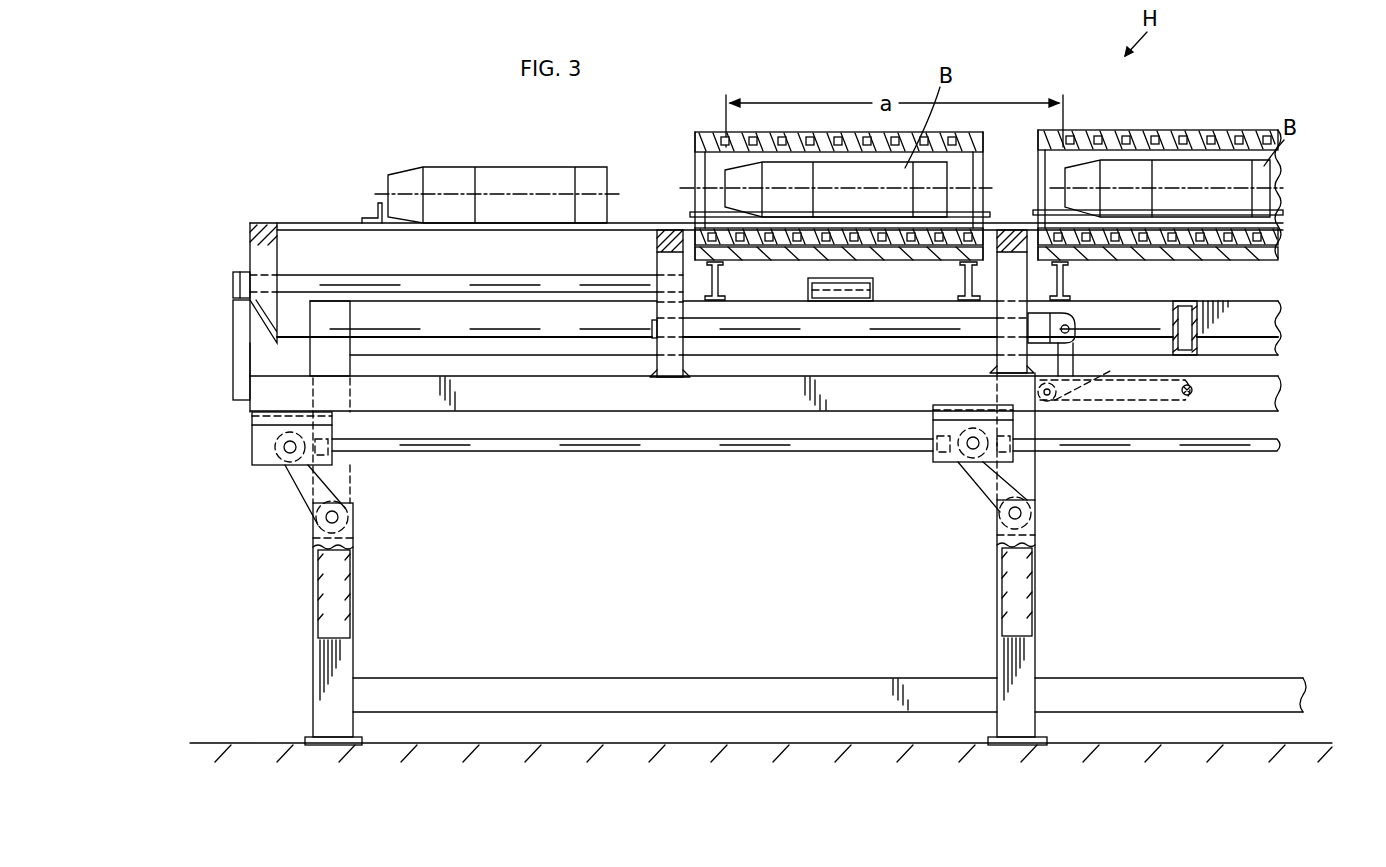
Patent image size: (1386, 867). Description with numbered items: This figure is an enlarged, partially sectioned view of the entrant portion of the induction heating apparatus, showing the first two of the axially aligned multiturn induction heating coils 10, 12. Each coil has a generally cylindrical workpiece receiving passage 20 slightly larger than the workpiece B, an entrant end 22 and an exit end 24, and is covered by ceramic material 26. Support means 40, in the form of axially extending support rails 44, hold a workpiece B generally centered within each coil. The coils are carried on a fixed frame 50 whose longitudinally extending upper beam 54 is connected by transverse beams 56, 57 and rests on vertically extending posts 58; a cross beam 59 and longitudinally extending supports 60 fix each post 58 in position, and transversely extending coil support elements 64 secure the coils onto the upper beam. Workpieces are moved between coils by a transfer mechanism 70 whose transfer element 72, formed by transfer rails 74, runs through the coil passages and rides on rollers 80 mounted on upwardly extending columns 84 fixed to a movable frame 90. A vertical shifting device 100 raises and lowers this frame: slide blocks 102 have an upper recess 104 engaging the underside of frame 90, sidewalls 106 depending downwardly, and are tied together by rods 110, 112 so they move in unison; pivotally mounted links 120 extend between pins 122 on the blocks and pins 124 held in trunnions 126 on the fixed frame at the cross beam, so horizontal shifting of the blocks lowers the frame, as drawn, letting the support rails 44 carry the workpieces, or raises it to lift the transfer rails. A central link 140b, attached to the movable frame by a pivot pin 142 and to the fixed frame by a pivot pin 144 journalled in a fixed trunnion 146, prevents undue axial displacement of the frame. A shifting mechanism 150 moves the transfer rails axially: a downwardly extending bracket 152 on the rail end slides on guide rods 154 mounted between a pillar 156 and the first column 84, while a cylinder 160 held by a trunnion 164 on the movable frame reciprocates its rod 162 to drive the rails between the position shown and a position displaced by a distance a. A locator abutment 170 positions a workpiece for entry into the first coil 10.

The induction heating coil 10 is at (756, 130).
The induction heating coil 12 is at (1166, 130).
The workpiece receiving passage 20 is at (960, 160).
The entrant end 22 is at (700, 165).
The exit end 24 is at (986, 165).
The roller chain track 26 is at (795, 134).
The support means 40 is at (957, 251).
The support rail 44 is at (707, 207).
The fixed frame 50 is at (1050, 636).
The upper beam 54 is at (1100, 301).
The transverse beam 56 is at (1210, 322).
The transverse beam 57 is at (871, 291).
The post 58 is at (350, 656).
The cross beam 59 is at (352, 592).
The longitudinally extending support 60 is at (790, 678).
The coil support element 64 is at (719, 285).
The transfer mechanism 70 is at (272, 487).
The transfer element 72 is at (647, 221).
The transfer rail 74 is at (312, 222).
The roller 80 is at (691, 222).
The column 84 is at (656, 246).
The movable frame 90 is at (798, 405).
The vertical shifting device 100 is at (958, 486).
The slide block 102 is at (252, 447).
The upper recess 104 is at (330, 412).
The sidewall 106 is at (330, 470).
The rod 110 is at (572, 452).
The rod 112 is at (1152, 452).
The link 120 is at (300, 492).
The pin 122 is at (296, 447).
The pin 124 is at (339, 517).
The trunnion 126 is at (355, 536).
The link 140b is at (1150, 402).
The pivot pin 142 is at (1193, 390).
The pivot pin 144 is at (1090, 372).
The fixed trunnion 146 is at (1056, 394).
The shifting mechanism 150 is at (258, 329).
The bracket 152 is at (273, 262).
The guide rod 154 is at (468, 290).
The pillar 156 is at (235, 391).
The cylinder 160 is at (750, 340).
The rod 162 is at (568, 340).
The trunnion 164 is at (1076, 330).
The locator abutment 170 is at (368, 216).